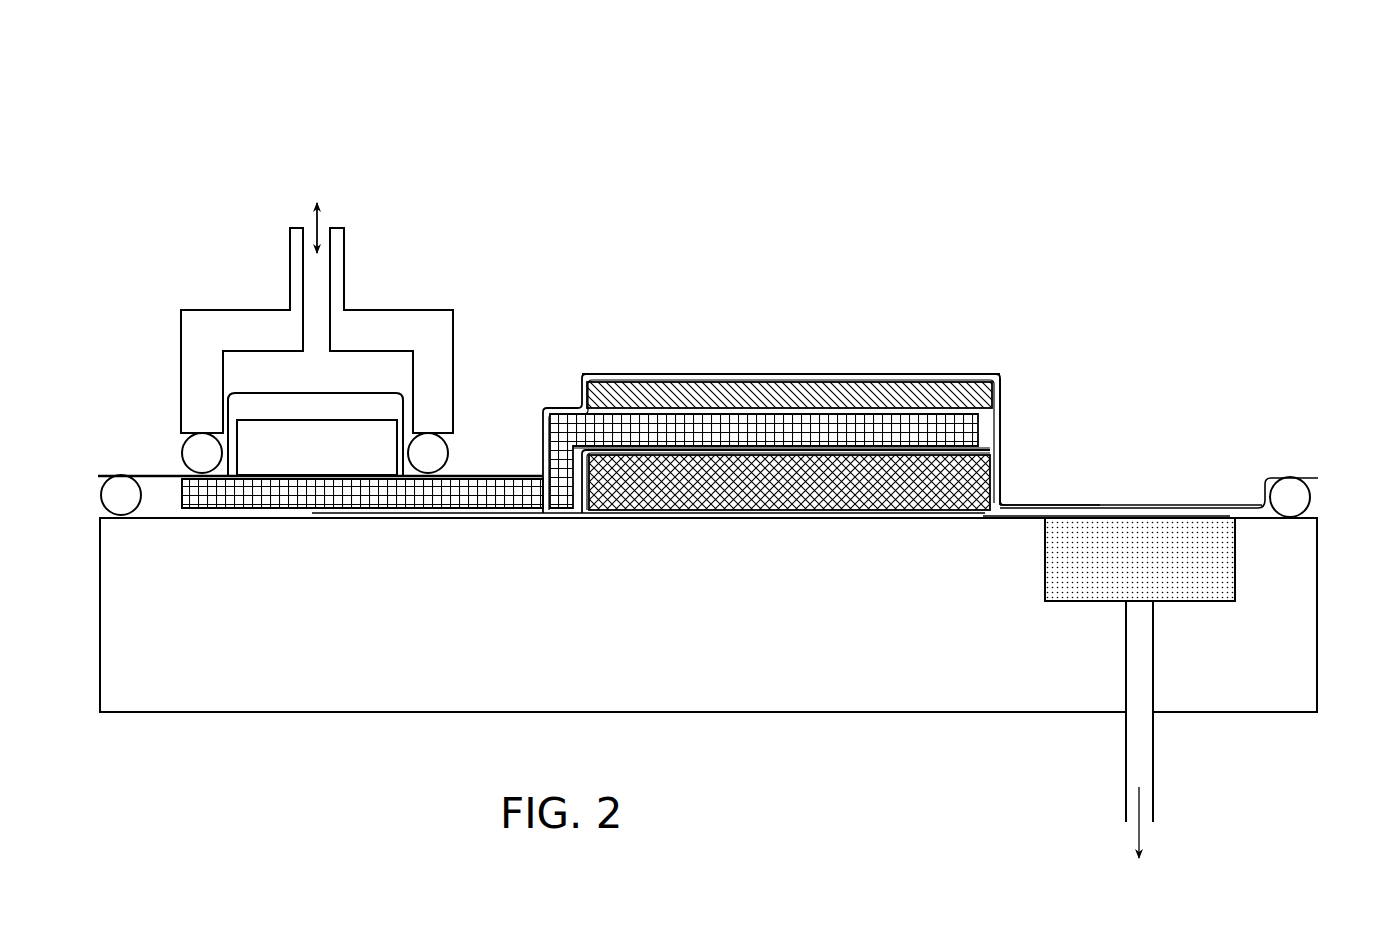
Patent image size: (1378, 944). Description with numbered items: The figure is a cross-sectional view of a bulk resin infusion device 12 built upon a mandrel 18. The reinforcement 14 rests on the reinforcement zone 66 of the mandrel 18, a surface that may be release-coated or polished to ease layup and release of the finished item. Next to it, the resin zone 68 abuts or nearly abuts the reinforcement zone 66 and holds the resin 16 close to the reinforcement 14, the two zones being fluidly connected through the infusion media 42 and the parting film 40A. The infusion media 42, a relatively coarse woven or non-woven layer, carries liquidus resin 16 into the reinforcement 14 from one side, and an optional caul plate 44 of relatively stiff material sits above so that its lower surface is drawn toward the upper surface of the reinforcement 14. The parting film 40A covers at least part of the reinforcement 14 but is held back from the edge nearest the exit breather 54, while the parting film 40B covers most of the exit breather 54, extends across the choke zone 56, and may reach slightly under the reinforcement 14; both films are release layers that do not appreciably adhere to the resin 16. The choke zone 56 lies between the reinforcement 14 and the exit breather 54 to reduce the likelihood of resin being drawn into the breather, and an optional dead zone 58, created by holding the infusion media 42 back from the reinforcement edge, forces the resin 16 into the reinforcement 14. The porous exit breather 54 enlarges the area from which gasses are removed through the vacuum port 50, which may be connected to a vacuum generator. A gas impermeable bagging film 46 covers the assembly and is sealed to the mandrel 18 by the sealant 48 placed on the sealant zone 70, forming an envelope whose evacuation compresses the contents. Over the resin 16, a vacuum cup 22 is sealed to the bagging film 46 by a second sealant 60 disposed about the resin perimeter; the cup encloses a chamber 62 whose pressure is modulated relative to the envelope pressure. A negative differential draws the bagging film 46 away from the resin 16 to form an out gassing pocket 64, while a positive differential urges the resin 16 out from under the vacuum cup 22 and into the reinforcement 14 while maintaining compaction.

The BRI device 12 is at (936, 66).
The reinforcement 14 is at (1000, 470).
The resin 16 is at (397, 420).
The mandrel 18 is at (1043, 507).
The vacuum cup 22 is at (344, 242).
The parting film 40A is at (905, 452).
The parting film 40B is at (1133, 508).
The infusion media 42 is at (838, 413).
The caul plate 44 is at (743, 382).
The bagging film 46 is at (693, 374).
The sealant 48 is at (102, 495).
The vacuum port 50 is at (1126, 767).
The exit breather 54 is at (1045, 586).
The choke zone 56 is at (1030, 524).
The dead zone 58 is at (982, 463).
The sealant 60 is at (182, 454).
The chamber 62 is at (326, 376).
The out gassing pocket 64 is at (250, 404).
The reinforcement zone 66 is at (762, 522).
The resin zone 68 is at (303, 522).
The sealant zone 70 is at (127, 522).